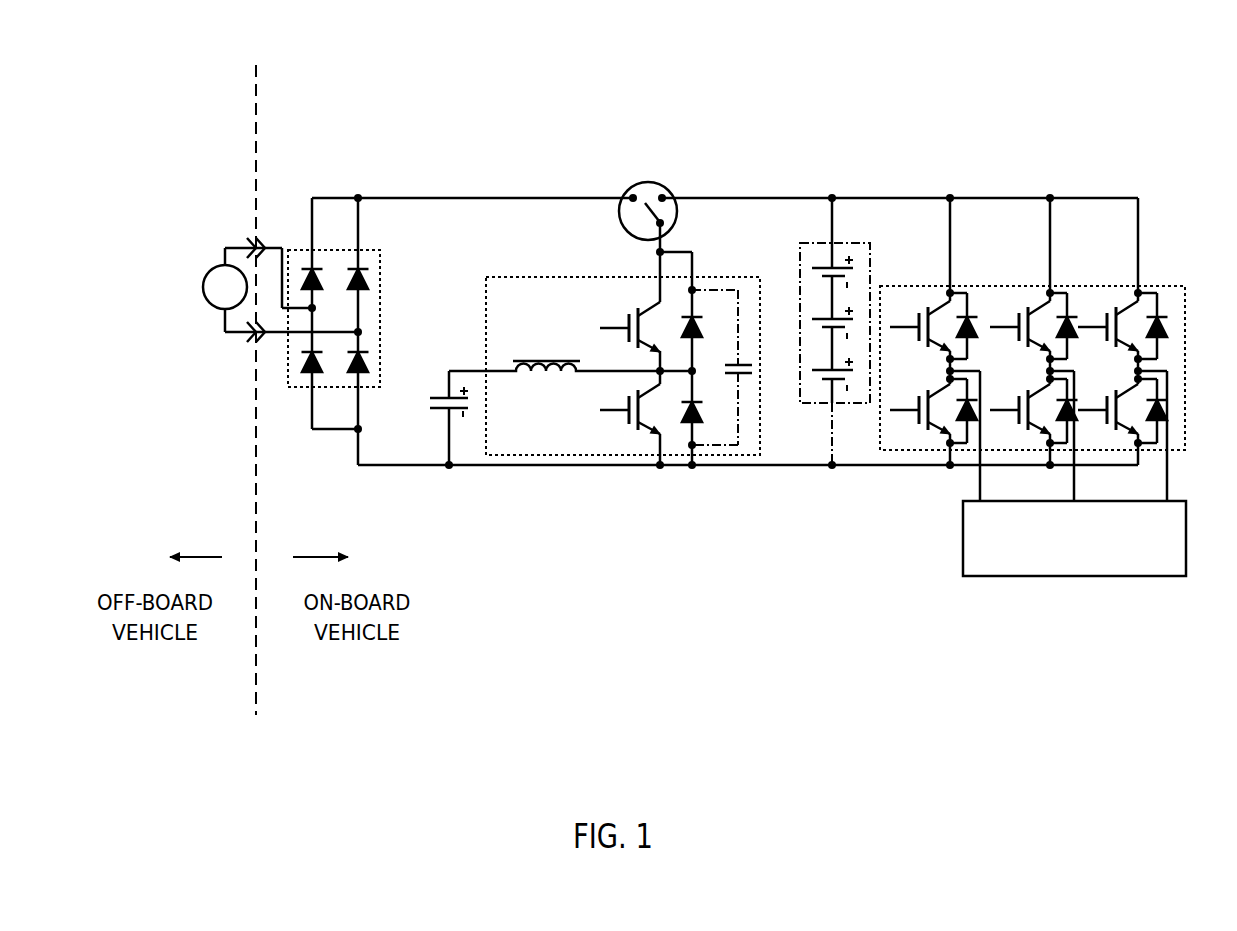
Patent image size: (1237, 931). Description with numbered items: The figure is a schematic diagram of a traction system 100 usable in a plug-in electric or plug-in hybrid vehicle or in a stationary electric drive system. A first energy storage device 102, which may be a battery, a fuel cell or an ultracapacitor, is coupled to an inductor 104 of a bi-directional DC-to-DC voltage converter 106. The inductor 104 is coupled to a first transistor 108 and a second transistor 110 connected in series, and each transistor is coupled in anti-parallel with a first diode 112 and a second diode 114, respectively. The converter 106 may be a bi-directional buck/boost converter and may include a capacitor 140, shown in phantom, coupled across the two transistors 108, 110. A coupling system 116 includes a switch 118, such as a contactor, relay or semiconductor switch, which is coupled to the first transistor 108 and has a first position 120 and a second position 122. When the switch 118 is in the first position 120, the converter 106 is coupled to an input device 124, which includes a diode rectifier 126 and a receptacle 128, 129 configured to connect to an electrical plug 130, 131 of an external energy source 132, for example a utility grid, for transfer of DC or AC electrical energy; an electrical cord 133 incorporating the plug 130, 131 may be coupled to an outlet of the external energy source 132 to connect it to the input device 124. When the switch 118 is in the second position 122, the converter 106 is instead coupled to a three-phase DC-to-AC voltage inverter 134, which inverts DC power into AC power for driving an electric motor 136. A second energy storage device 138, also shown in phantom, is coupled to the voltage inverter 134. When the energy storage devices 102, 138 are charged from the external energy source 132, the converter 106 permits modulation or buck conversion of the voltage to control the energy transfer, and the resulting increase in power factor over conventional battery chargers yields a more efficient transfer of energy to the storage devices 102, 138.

The traction system 100 is at (605, 116).
The first energy storage device 102 is at (436, 410).
The inductor 104 is at (525, 362).
The bi-directional DC-to-DC voltage converter 106 is at (513, 277).
The first transistor 108 is at (617, 327).
The second transistor 110 is at (617, 410).
The first diode 112 is at (700, 335).
The second diode 114 is at (700, 412).
The coupling system 116 is at (601, 202).
The switch 118 is at (657, 236).
The first position 120 is at (626, 213).
The second position 122 is at (671, 183).
The input device 124 is at (243, 413).
The diode rectifier 126 is at (380, 293).
The receptacle 128 is at (267, 242).
The receptacle 129 is at (262, 337).
The electrical plug 130 is at (256, 241).
The electrical plug 131 is at (258, 334).
The external energy source 132 is at (203, 283).
The electrical cord 133 is at (228, 248).
The three-phase DC-to-AC voltage inverter 134 is at (912, 286).
The electric motor 136 is at (1172, 576).
The second energy storage device 138 is at (808, 243).
The capacitor 140 is at (745, 373).